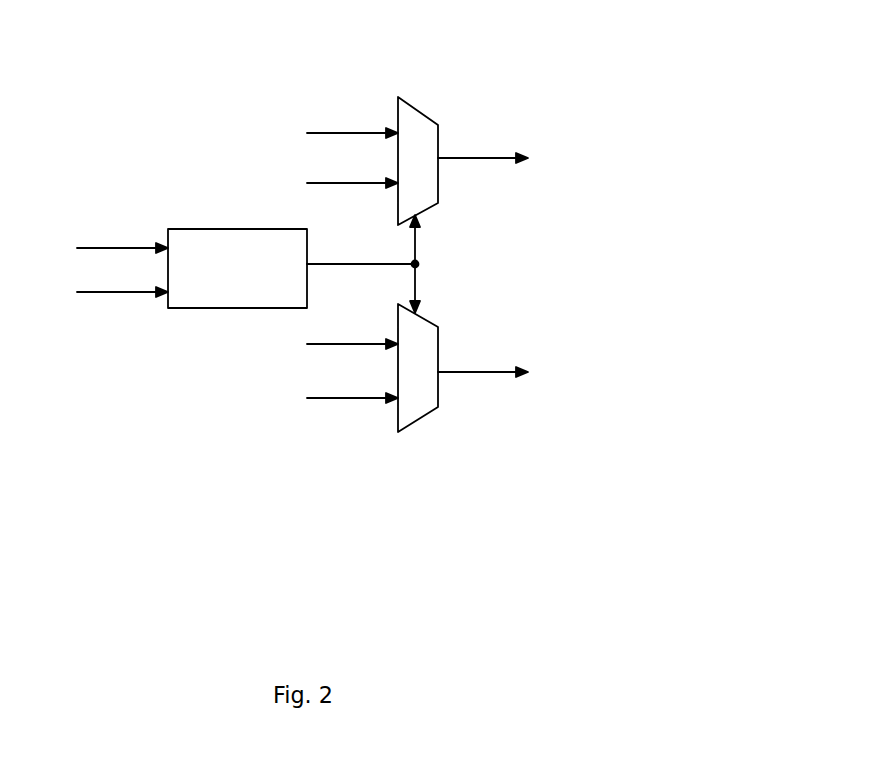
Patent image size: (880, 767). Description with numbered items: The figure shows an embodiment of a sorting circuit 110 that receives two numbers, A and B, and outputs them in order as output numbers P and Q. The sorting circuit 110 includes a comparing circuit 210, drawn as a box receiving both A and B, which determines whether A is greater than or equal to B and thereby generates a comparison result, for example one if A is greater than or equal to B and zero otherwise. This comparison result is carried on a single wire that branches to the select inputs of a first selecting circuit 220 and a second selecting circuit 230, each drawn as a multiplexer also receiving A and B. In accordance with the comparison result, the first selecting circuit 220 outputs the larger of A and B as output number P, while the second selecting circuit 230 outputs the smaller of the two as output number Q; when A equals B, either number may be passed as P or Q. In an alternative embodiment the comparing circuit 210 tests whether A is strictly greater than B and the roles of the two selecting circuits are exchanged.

The sorting circuit 110 is at (72, 552).
The comparing circuit 210 is at (195, 229).
The first selecting circuit 220 is at (417, 110).
The second selecting circuit 230 is at (412, 427).